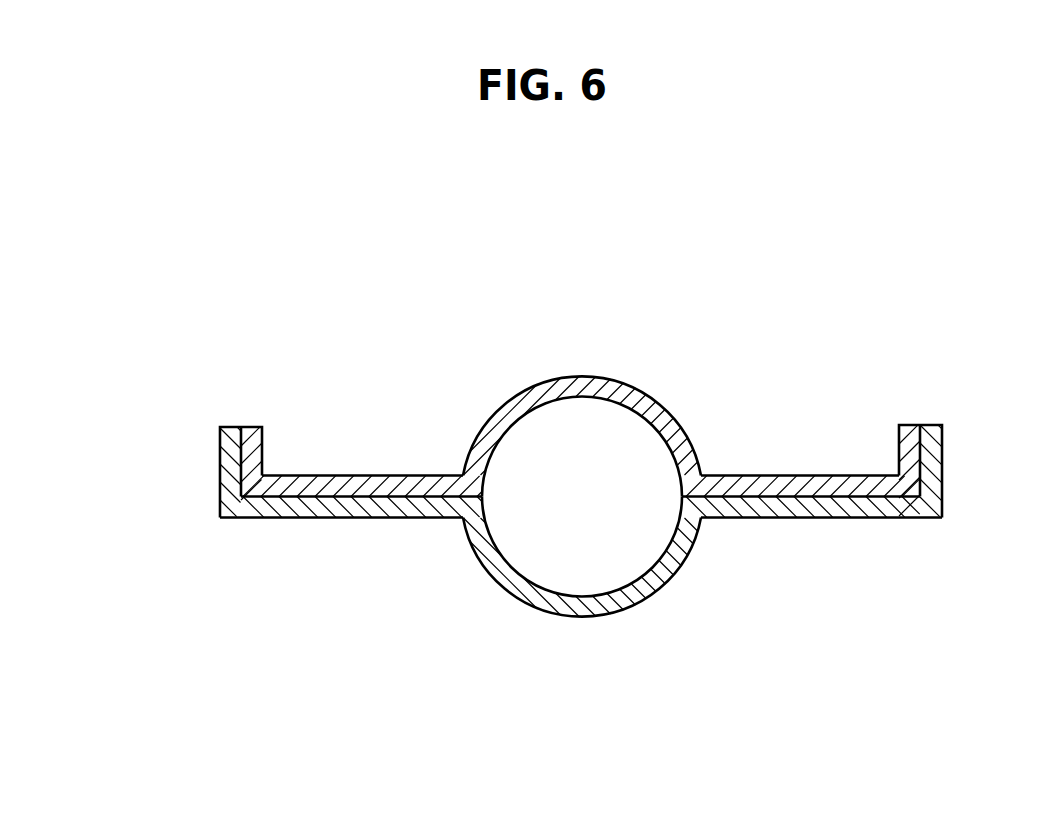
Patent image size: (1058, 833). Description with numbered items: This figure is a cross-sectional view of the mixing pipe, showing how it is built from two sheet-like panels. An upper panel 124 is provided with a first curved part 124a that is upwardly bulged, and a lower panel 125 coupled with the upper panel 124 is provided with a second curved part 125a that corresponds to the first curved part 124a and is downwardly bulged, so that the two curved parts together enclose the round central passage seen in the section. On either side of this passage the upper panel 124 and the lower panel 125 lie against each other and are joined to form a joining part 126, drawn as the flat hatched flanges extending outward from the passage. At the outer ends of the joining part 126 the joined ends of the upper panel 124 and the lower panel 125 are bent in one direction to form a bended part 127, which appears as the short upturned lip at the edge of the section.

The upper panel 124 is at (802, 497).
The first curved part 124a is at (557, 428).
The lower panel 125 is at (802, 497).
The second curved part 125a is at (580, 595).
The joining part 126 is at (373, 557).
The bended part 127 is at (190, 425).